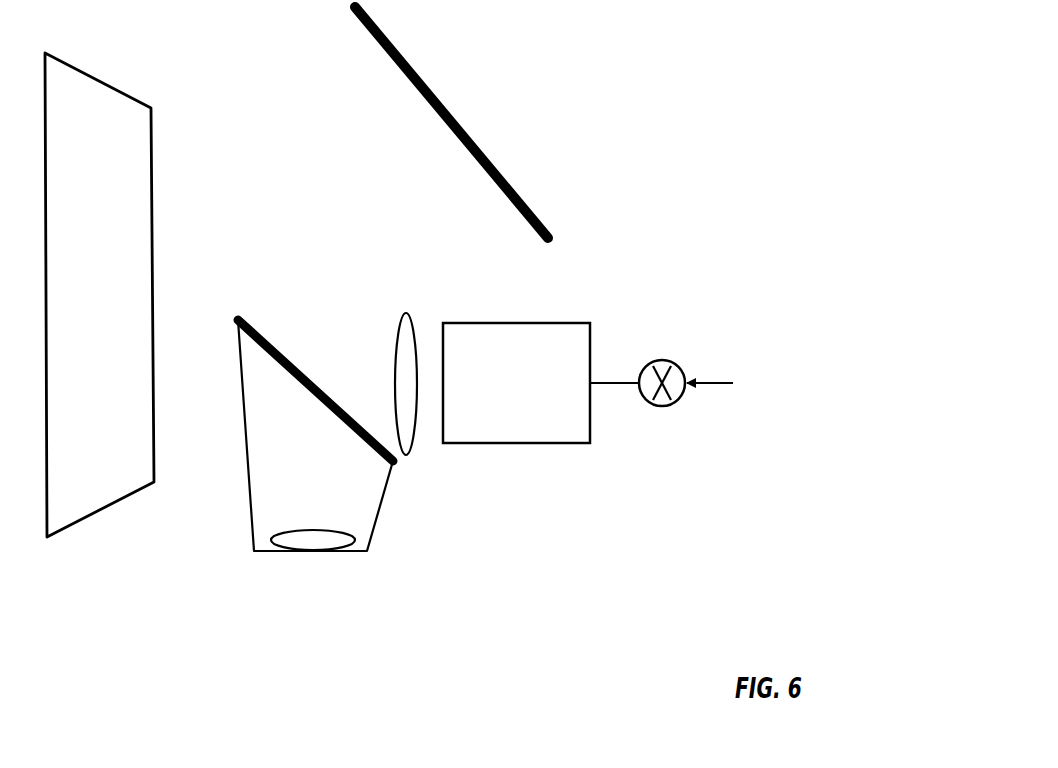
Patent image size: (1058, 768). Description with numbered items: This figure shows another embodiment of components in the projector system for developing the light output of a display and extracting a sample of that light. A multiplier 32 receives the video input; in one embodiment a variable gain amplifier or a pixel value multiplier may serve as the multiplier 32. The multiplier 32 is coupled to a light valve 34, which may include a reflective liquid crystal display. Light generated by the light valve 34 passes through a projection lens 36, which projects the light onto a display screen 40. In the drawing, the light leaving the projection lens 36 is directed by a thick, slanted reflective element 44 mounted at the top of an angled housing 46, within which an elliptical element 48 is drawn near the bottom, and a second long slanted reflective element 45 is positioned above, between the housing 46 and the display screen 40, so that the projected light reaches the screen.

The multiplier 32 is at (712, 356).
The light valve 34 is at (523, 356).
The projection lens 36 is at (446, 414).
The display screen 40 is at (134, 295).
The mirror 44 is at (315, 363).
The mirror 45 is at (451, 122).
The housing 46 is at (272, 438).
The lamp 48 is at (339, 566).